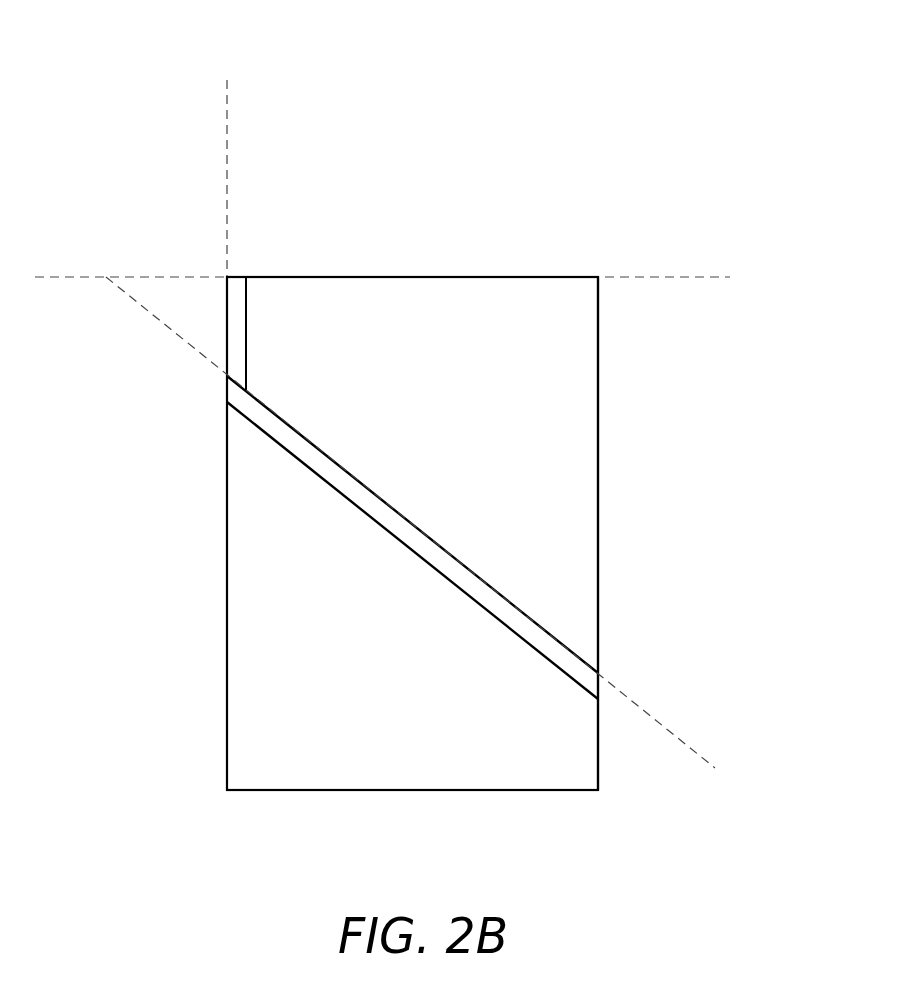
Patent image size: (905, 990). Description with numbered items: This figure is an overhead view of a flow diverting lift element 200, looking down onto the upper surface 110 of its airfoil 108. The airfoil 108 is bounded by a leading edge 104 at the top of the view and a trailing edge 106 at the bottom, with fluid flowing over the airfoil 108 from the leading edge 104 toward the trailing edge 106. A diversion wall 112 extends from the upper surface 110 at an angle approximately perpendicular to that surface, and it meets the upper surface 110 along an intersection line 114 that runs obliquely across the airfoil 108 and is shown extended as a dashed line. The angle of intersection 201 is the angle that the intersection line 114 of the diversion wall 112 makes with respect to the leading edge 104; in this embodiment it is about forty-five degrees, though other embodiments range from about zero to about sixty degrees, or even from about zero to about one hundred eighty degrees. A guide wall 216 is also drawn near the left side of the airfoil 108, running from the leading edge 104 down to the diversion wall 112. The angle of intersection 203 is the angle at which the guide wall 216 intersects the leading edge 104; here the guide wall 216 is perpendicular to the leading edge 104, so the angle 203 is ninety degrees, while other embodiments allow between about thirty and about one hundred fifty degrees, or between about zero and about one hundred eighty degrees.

The flow diverting lift element 200 is at (437, 70).
The leading edge 104 is at (474, 276).
The trailing edge 106 is at (412, 792).
The airfoil 108 is at (560, 395).
The curved upper surface 110 is at (273, 767).
The diversion wall 112 is at (397, 527).
The intersection line 114 is at (655, 720).
The guide wall 216 is at (237, 333).
The angle of intersection 201 is at (176, 284).
The angle of intersection 203 is at (233, 217).